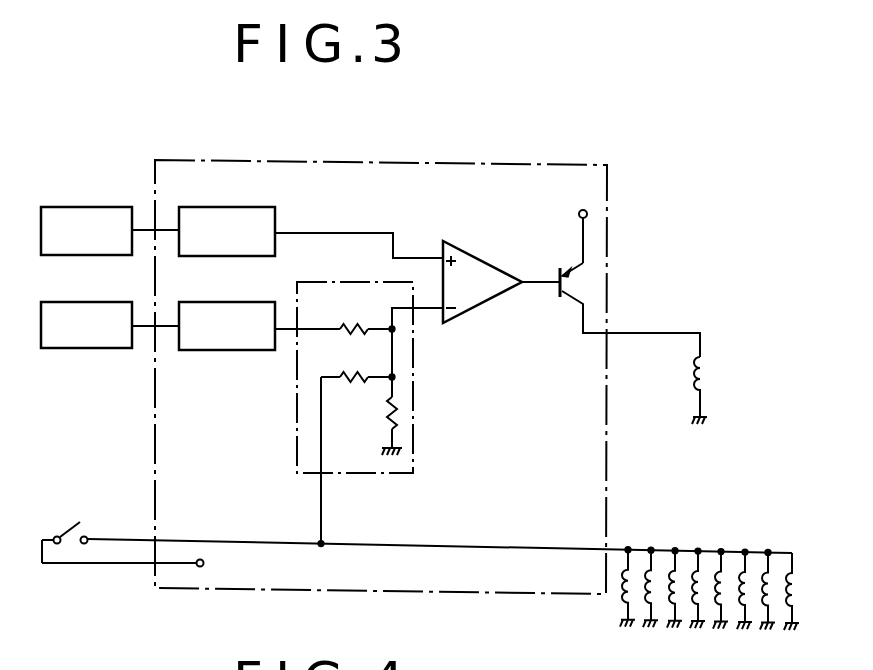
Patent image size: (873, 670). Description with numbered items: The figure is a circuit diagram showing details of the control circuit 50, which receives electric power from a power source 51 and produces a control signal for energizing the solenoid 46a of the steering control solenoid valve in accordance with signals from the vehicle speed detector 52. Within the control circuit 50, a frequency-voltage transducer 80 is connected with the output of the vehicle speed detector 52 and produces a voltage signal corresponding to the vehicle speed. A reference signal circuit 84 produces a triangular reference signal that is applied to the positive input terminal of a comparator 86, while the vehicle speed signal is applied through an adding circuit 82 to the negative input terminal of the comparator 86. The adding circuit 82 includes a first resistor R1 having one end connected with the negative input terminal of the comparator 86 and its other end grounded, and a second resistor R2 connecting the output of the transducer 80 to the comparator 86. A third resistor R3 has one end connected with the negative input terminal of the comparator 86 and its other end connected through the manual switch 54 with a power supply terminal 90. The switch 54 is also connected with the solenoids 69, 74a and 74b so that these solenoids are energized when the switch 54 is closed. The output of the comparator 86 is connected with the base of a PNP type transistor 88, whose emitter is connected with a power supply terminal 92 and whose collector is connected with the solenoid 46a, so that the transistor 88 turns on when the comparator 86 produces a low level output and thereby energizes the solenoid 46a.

The control circuit 50 is at (513, 594).
The power source 51 is at (83, 207).
The vehicle speed detector 52 is at (62, 348).
The manual switch 54 is at (62, 528).
The frequency-voltage transducer 80 is at (225, 350).
The adding circuit 82 is at (390, 377).
The reference signal circuit 84 is at (247, 207).
The comparator 86 is at (489, 309).
The PNP type transistor 88 is at (566, 304).
The power supply terminal 90 is at (204, 563).
The power supply terminal 92 is at (578, 206).
The solenoid 46a is at (707, 372).
The solenoid 69 is at (646, 605).
The solenoid 74a is at (740, 605).
The solenoid 74b is at (787, 605).
The first resistor R1 is at (362, 420).
The second resistor R2 is at (350, 326).
The third resistor R3 is at (349, 374).